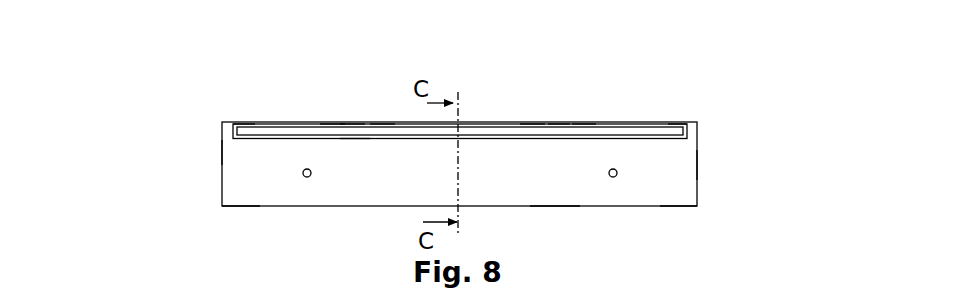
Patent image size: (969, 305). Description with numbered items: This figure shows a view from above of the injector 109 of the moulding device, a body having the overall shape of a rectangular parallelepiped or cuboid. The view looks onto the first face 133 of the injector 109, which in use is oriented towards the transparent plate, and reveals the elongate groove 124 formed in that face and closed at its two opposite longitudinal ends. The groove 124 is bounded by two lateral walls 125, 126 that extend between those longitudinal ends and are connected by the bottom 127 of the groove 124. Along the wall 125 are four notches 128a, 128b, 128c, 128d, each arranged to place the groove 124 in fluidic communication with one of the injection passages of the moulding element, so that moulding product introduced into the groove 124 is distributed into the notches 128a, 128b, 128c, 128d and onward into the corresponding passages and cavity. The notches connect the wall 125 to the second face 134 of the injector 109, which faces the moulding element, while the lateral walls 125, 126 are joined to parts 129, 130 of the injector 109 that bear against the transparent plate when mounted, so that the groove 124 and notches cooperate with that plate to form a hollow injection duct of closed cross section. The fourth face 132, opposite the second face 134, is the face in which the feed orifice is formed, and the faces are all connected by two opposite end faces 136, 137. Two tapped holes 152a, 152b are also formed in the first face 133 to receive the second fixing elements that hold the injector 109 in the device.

The injector 109 is at (728, 102).
The groove 124 is at (652, 135).
The lateral wall 125 is at (355, 138).
The lateral wall 126 is at (332, 123).
The bottom of the groove 127 is at (583, 125).
The notch 128a is at (243, 125).
The notch 128b is at (382, 125).
The notch 128c is at (533, 125).
The notch 128d is at (680, 125).
The part of the injector 129 is at (558, 125).
The part of the injector 130 is at (303, 143).
The fourth face 132 is at (555, 210).
The first face 133 is at (673, 192).
The second face 134 is at (352, 120).
The end face 136 is at (220, 152).
The end face 137 is at (702, 165).
The tapped hole 152a is at (304, 177).
The tapped hole 152b is at (616, 177).